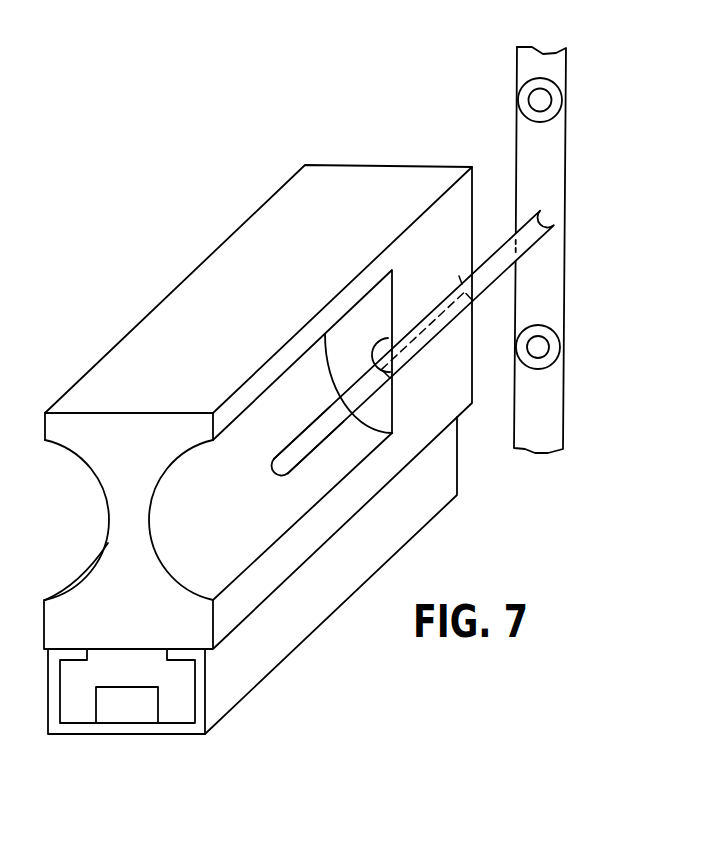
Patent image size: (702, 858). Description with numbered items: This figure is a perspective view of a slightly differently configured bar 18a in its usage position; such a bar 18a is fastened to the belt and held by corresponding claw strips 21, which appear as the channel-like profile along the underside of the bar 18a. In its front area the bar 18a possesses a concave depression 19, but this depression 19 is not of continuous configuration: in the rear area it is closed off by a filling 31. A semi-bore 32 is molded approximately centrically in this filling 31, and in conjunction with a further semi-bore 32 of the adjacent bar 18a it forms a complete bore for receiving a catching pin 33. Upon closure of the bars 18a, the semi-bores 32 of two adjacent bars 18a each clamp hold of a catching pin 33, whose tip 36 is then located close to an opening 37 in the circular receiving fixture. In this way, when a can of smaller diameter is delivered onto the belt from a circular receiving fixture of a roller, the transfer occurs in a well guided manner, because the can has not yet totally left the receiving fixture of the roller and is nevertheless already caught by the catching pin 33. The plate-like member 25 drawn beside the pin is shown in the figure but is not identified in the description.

The bar 18a is at (199, 253).
The concave depression 19 is at (227, 552).
The claw strips 21 is at (233, 666).
The bracket 25 is at (546, 278).
The filling 31 is at (383, 312).
The semi-bore 32 is at (390, 338).
The catching pin 33 is at (488, 265).
The tip 36 is at (275, 463).
The opening 37 is at (147, 533).